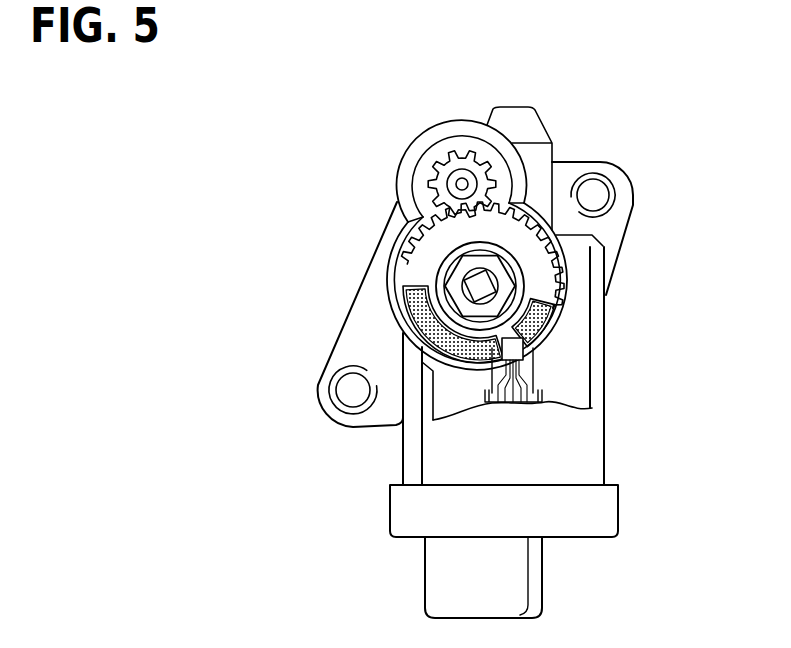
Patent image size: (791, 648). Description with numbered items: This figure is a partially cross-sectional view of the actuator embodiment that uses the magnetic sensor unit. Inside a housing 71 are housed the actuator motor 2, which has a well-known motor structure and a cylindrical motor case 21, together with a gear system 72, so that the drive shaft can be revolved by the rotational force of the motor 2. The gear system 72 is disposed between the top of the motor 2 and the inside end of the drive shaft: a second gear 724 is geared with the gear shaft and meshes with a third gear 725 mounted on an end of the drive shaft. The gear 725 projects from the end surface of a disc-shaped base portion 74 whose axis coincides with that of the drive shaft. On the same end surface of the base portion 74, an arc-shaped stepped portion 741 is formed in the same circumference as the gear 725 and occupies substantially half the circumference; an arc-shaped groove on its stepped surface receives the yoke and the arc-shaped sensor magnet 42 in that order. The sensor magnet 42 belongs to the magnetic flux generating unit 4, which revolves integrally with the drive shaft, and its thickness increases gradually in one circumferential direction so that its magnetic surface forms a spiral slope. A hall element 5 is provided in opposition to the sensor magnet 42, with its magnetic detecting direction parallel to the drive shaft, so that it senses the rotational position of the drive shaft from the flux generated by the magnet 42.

The actuator motor 2 is at (600, 300).
The motor case 21 is at (572, 335).
The magnetic flux generating unit 4 is at (398, 328).
The sensor magnet 42 is at (405, 308).
The hall element 5 is at (513, 352).
The housing 71 is at (597, 512).
The gear system 72 is at (422, 205).
The base portion 74 is at (422, 260).
The stepped portion 741 is at (420, 280).
The second gear 724 is at (452, 160).
The third gear 725 is at (535, 218).